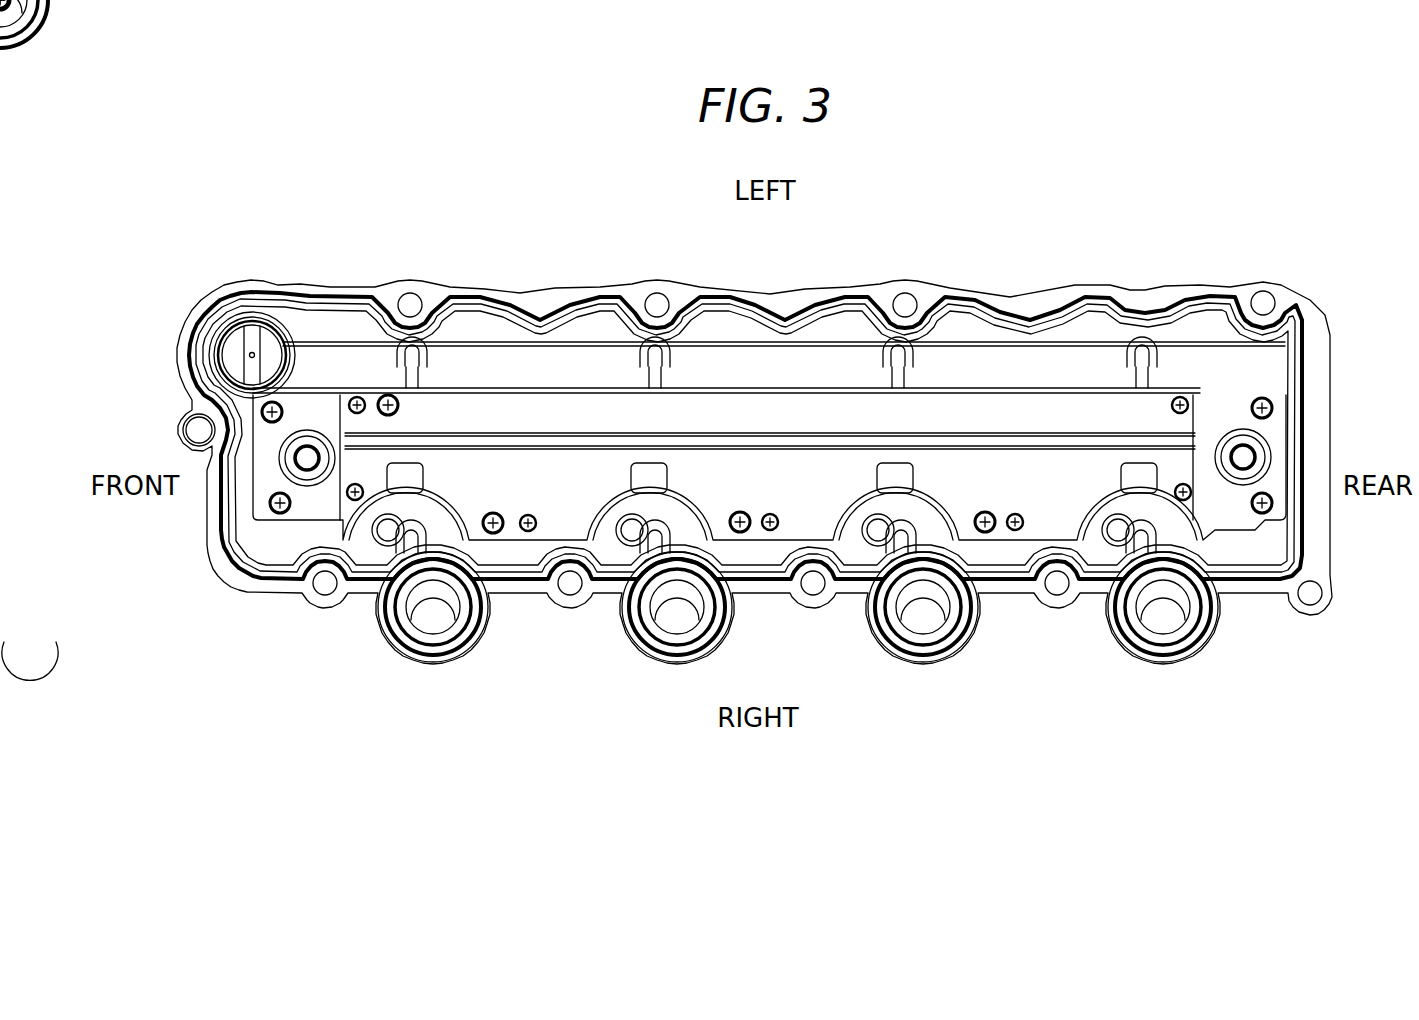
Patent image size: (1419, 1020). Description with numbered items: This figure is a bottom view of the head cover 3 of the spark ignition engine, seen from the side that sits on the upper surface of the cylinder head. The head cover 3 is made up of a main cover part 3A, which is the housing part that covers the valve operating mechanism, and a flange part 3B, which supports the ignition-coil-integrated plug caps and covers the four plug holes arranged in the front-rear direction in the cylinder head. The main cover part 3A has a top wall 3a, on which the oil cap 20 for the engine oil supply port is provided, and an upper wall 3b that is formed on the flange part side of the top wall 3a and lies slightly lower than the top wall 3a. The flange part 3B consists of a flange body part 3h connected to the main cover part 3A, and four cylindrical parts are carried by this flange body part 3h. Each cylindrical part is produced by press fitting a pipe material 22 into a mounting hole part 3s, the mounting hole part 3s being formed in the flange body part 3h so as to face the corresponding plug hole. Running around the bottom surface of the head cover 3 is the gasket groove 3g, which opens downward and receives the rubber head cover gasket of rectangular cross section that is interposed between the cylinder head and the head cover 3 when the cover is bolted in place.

The head cover 3 is at (275, 266).
The gasket groove 3g is at (345, 288).
The main cover part 3A is at (1176, 286).
The top wall 3a is at (613, 416).
The upper wall 3b is at (443, 513).
The oil cap 20 is at (232, 357).
The flange part 3B is at (381, 625).
The mounting hole part 3s is at (422, 648).
The flange body part 3h is at (620, 626).
The pipe material 22 is at (458, 672).